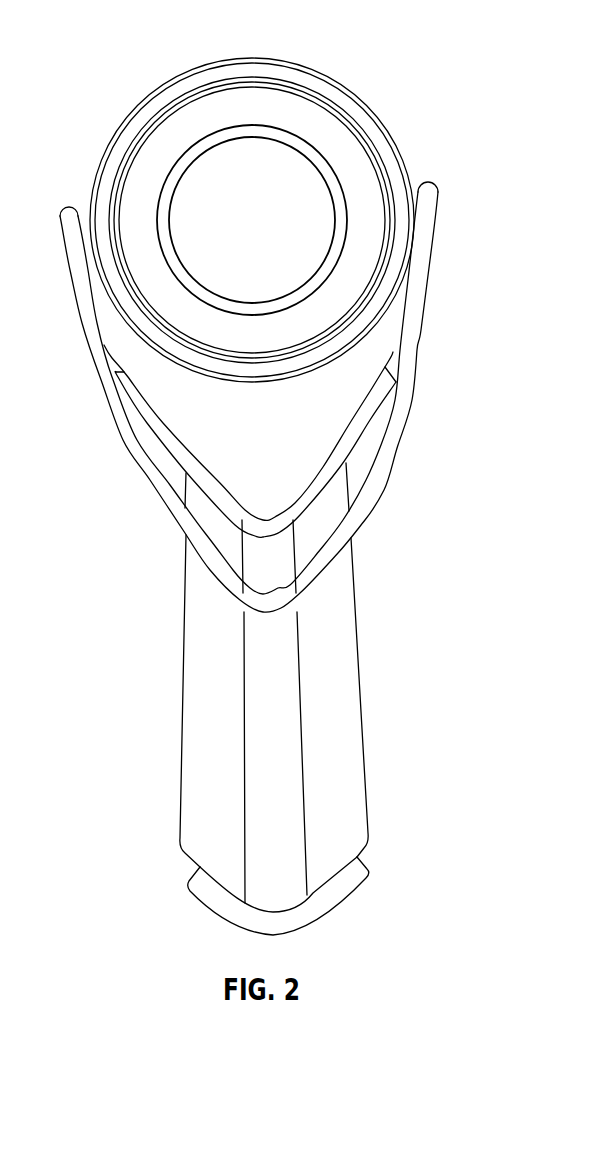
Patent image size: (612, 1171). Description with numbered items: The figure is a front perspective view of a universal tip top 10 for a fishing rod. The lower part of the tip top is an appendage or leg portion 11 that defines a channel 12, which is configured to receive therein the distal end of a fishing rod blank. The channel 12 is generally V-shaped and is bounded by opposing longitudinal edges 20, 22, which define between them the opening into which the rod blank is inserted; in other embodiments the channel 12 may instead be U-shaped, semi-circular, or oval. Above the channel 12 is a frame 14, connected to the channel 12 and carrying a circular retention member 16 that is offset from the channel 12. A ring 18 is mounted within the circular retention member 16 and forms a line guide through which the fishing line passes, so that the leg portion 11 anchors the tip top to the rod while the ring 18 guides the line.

The universal tip top 10 is at (442, 50).
The leg portion 11 is at (210, 794).
The channel 12 is at (320, 671).
The frame 14 is at (132, 445).
The circular retention member 16 is at (173, 90).
The ring 18 is at (267, 97).
The longitudinal edge 20 is at (181, 682).
The longitudinal edge 22 is at (370, 770).